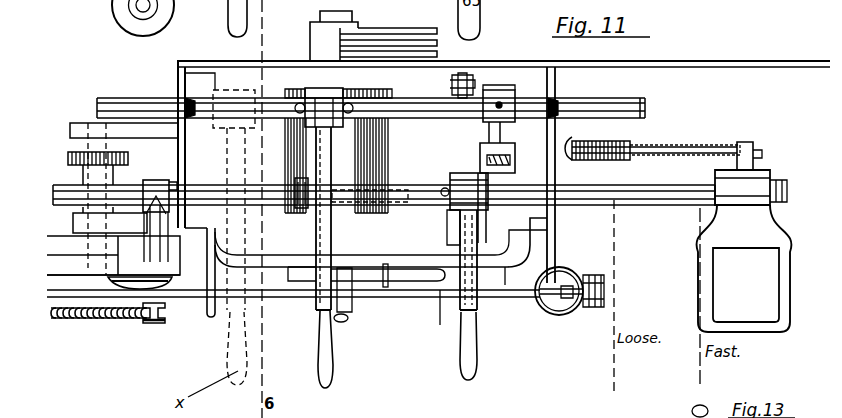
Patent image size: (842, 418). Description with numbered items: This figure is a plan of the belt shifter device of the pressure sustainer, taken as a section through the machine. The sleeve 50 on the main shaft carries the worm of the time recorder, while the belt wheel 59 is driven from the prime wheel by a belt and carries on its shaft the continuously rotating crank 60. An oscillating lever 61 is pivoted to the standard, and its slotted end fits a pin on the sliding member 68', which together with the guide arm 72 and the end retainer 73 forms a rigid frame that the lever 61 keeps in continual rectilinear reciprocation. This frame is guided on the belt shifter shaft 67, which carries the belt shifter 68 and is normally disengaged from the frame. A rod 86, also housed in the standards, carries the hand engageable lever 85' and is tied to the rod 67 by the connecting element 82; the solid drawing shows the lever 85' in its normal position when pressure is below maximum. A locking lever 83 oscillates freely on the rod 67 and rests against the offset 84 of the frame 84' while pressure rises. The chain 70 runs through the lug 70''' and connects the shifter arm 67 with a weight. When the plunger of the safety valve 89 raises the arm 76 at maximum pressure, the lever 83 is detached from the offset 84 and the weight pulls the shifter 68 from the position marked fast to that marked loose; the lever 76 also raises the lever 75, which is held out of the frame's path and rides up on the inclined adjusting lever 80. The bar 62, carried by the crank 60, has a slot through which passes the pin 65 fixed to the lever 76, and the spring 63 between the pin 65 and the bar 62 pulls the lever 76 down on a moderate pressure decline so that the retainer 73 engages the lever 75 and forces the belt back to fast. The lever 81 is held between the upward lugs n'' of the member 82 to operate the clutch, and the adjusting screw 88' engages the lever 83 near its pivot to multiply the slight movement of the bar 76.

The sleeve 50 is at (210, 148).
The belt wheel 59 is at (71, 157).
The crank 60 is at (113, 244).
The oscillating lever 61 is at (67, 274).
The bar 62 is at (137, 287).
The spring 63 is at (93, 320).
The pin 65 is at (157, 325).
The belt shifter shaft 67 is at (660, 198).
The belt shifter 68 is at (761, 251).
The sliding member 68' is at (157, 205).
The chain 70 is at (656, 143).
The lug 70''' is at (776, 157).
The guide arm 72 is at (276, 200).
The end retainer 73 is at (300, 214).
The lever 75 is at (323, 163).
The arm 76 is at (518, 300).
The adjusting means 80 is at (377, 285).
The lever 81 is at (507, 160).
The connecting element 82 is at (493, 130).
The locking lever 83 is at (478, 331).
The offset 84 is at (433, 329).
The frame 84' is at (422, 237).
The hand engageable lever 85' is at (311, 257).
The rod 86 is at (615, 110).
The adjusting screw 88' is at (459, 133).
The safety valve 89 is at (570, 272).
The upward extending lugs n'' is at (551, 121).